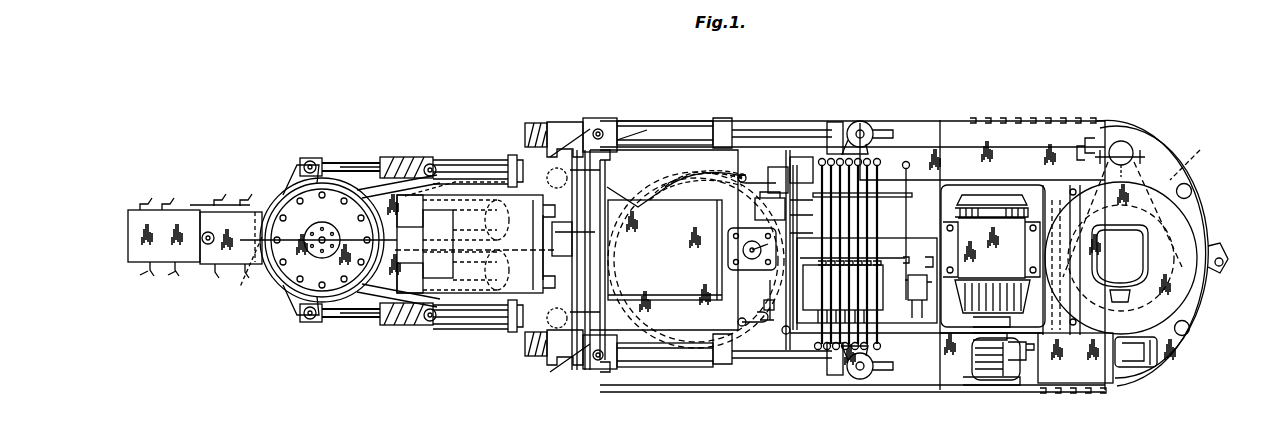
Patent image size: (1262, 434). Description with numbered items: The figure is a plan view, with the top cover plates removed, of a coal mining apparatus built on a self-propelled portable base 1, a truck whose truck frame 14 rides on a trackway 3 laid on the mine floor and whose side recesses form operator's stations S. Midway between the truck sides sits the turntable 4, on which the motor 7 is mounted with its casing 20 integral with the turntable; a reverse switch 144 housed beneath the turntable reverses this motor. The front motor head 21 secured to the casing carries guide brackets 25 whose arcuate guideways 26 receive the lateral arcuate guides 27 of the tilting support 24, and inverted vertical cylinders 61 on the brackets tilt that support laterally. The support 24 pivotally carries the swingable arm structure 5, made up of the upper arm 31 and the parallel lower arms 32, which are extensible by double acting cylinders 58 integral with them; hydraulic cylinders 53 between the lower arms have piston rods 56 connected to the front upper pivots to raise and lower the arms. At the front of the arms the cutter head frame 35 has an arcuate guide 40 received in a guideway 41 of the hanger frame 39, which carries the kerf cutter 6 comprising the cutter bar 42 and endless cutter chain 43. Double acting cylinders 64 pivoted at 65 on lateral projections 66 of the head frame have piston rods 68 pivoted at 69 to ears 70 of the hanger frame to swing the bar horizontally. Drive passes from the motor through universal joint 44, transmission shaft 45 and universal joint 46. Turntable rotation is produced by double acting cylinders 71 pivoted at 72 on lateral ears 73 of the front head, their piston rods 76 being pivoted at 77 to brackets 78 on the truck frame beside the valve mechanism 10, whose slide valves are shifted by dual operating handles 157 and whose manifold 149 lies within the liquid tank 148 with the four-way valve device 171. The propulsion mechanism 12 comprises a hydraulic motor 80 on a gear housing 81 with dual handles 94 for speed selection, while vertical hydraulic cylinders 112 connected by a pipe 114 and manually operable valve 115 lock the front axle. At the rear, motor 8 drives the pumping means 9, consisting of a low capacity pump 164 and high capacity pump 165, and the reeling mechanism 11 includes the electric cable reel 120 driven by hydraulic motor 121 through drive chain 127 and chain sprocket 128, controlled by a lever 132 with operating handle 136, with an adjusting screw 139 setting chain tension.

The self-propelled portable base 1 is at (965, 121).
The trackway 3 is at (399, 236).
The turntable 4 is at (542, 203).
The swingable arm structure 5 is at (485, 178).
The kerf cutter 6 is at (164, 198).
The motor 7 is at (666, 194).
The motor 8 is at (572, 160).
The pumping means 9 is at (1004, 370).
The valve mechanism 10 is at (873, 312).
The reeling mechanism 11 is at (1196, 211).
The propulsion mechanism 12 is at (768, 171).
The truck frame 14 is at (961, 378).
The casing 20 is at (678, 296).
The front motor head 21 is at (610, 366).
The tilting support 24 is at (606, 288).
The guide brackets 25 is at (530, 356).
The arcuate guideways 26 is at (598, 130).
The lateral arcuate guides 27 is at (644, 190).
The upper arm 31 is at (446, 180).
The lower arms 32 is at (496, 326).
The cutter head frame 35 is at (364, 164).
The hanger frame 39 is at (246, 210).
The arcuate guide 40 is at (272, 192).
The guideway 41 is at (242, 280).
The cutter bar 42 is at (197, 206).
The cutter chain 43 is at (173, 274).
The universal joint 44 is at (578, 230).
The transmission shaft 45 is at (466, 330).
The universal joint 46 is at (358, 318).
The hydraulic cylinders 53 is at (544, 196).
The piston rods 56 is at (480, 220).
The double acting cylinders 58 is at (456, 316).
The vertical cylinders 61 is at (554, 310).
The double acting cylinders 64 is at (393, 156).
The pivotal mounting 65 is at (411, 332).
The lateral projections 66 is at (396, 325).
The piston rods 68 is at (321, 344).
The pivotal connection 69 is at (298, 320).
The ears 70 is at (269, 308).
The double acting cylinders 71 is at (700, 124).
The pivotal mounting 72 is at (610, 132).
The lateral ears 73 is at (636, 132).
The piston rods 76 is at (833, 124).
The pivotal connection 77 is at (858, 122).
The brackets 78 is at (872, 130).
The hydraulic motor 80 is at (756, 206).
The gear housing 81 is at (802, 166).
The dual handles 94 is at (787, 130).
The vertical hydraulic cylinders 112 is at (657, 204).
The pipe 114 is at (747, 325).
The manually operable valve 115 is at (780, 312).
The electric cable reel 120 is at (1160, 327).
The hydraulic motor 121 is at (1122, 140).
The drive chain 127 is at (1206, 156).
The chain sprocket 128 is at (1208, 240).
The lever 132 is at (1098, 142).
The operating handle 136 is at (1150, 178).
The adjusting screw 139 is at (1125, 142).
The reverse switch 144 is at (752, 260).
The liquid tank 148 is at (897, 250).
The manifold 149 is at (797, 333).
The dual operating handles 157 is at (878, 168).
The pump 164 is at (1012, 376).
The pump 165 is at (980, 338).
The four-way valve device 171 is at (919, 320).
The operator's stations S is at (935, 140).